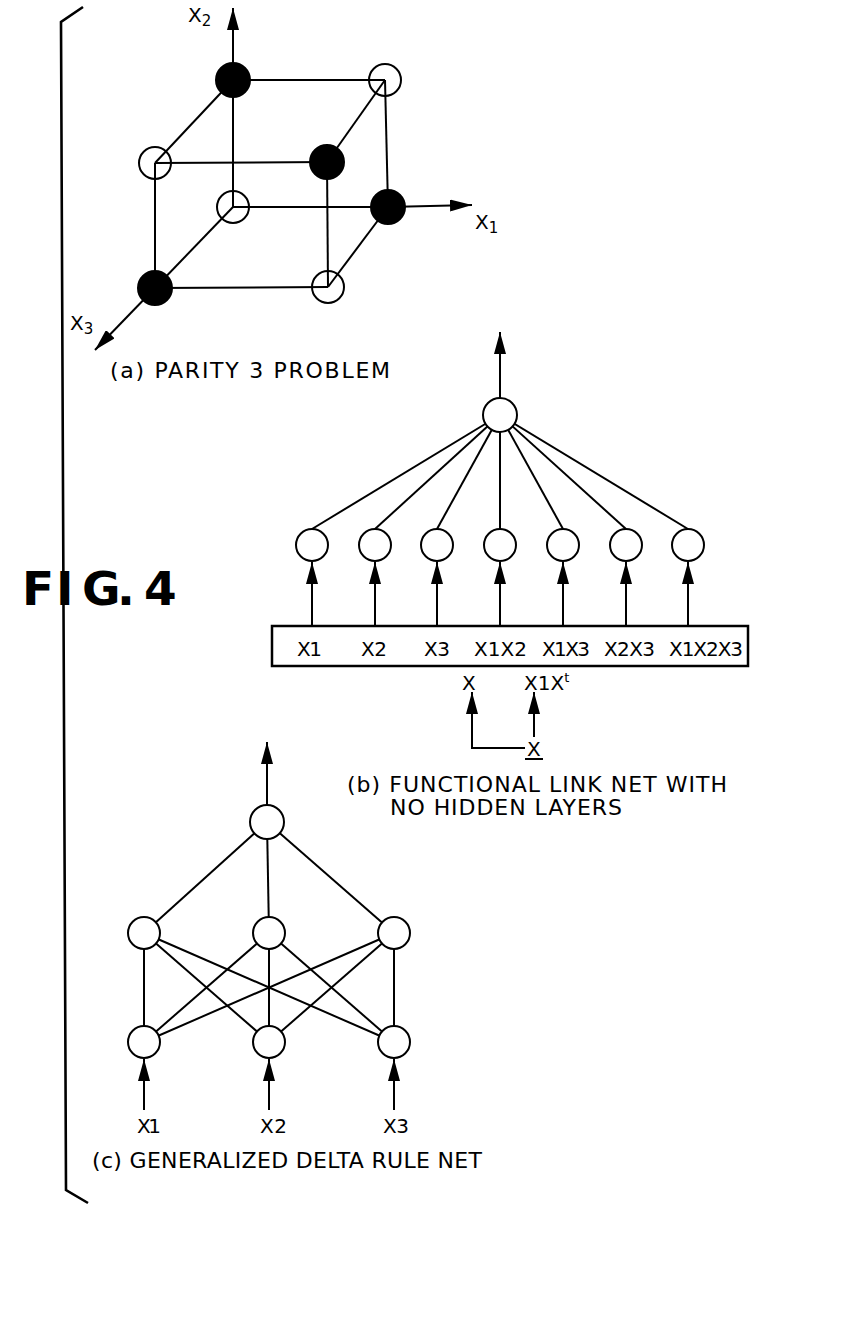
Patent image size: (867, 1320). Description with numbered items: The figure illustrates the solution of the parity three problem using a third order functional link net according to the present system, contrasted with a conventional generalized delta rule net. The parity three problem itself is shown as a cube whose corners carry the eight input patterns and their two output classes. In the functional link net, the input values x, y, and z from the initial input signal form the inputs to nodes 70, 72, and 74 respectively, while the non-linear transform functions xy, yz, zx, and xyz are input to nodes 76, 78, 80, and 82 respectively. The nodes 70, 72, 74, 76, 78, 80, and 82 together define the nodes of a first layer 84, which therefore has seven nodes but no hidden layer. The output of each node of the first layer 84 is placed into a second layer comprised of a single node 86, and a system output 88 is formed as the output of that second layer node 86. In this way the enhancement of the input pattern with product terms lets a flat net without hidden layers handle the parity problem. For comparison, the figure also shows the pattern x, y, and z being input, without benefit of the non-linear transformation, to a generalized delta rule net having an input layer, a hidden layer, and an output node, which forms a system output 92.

The node 70 is at (297, 558).
The node 72 is at (361, 558).
The node 74 is at (423, 558).
The node 76 is at (486, 558).
The node 78 is at (549, 558).
The node 80 is at (612, 558).
The node 82 is at (674, 558).
The first layer 84 is at (497, 557).
The node 86 is at (483, 410).
The system output 88 is at (501, 376).
The system output 92 is at (265, 782).